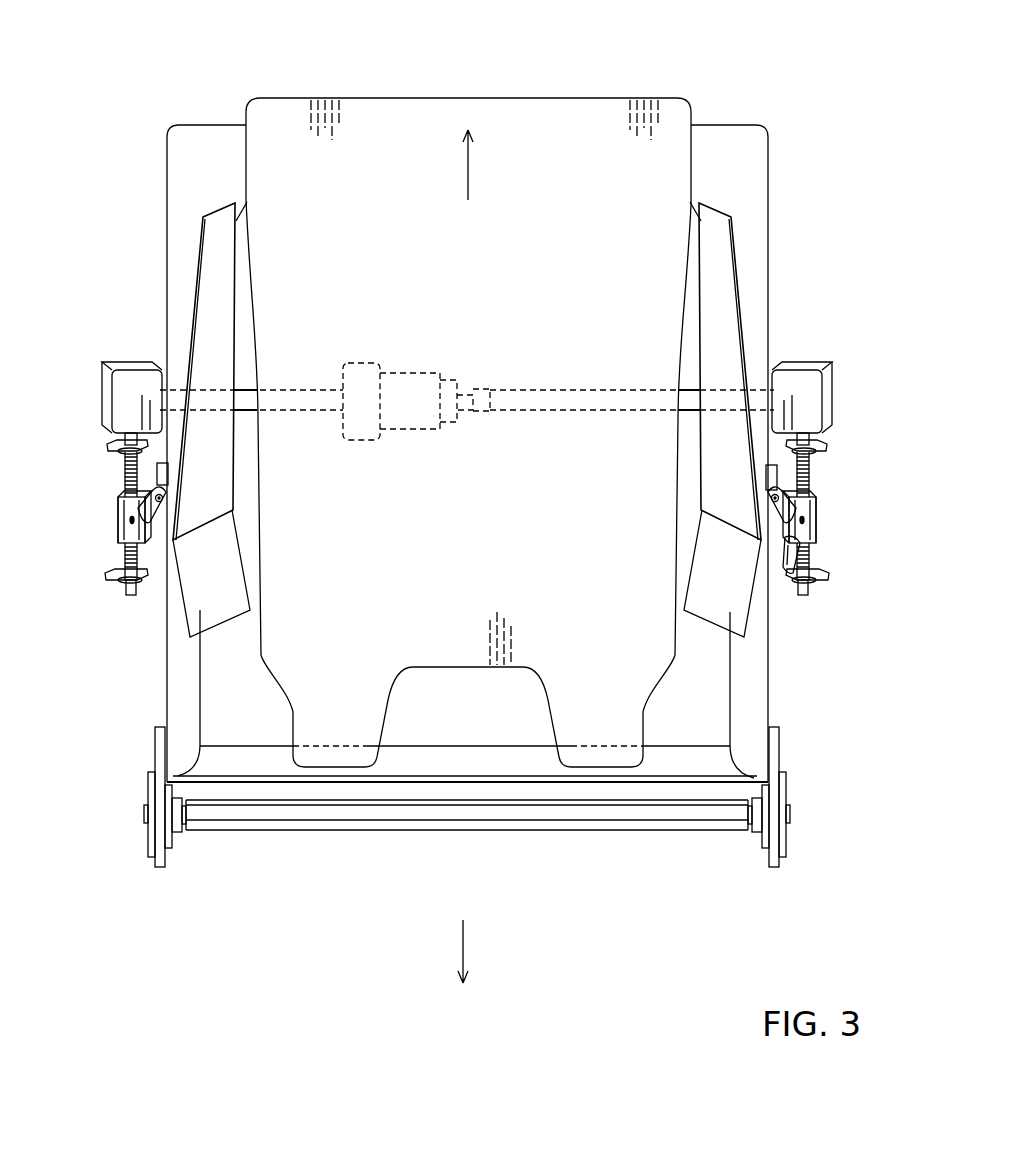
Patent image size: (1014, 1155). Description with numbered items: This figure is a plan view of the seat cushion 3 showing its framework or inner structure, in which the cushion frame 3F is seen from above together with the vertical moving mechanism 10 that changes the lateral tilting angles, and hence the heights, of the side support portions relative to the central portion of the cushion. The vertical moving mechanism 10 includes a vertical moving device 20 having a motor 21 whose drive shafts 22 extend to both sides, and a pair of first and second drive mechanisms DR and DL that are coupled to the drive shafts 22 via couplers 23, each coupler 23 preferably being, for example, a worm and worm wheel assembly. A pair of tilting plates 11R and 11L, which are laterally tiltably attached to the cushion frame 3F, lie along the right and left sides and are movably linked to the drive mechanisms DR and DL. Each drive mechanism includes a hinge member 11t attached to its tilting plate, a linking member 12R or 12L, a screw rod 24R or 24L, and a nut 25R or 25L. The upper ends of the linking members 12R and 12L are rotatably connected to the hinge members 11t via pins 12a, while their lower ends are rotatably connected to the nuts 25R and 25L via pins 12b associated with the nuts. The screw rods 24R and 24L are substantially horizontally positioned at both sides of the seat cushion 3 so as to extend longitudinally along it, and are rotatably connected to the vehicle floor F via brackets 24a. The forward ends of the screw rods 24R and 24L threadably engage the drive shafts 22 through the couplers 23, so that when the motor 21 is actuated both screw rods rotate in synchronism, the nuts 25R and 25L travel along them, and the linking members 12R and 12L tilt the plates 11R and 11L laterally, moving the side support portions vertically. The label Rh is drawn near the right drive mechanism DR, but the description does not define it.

The seat cushion 3 is at (686, 54).
The cushion frame 3F is at (722, 142).
The vertical moving mechanism 10 is at (505, 489).
The vertical moving device 20 is at (799, 174).
The tilting plate 11L is at (203, 275).
The tilting plate 11R is at (725, 278).
The hinge member 11t is at (166, 470).
The pin 12a is at (160, 502).
The pin 12b is at (131, 525).
The linking member 12L is at (104, 509).
The linking member 12R is at (838, 530).
The motor 21 is at (412, 382).
The drive shaft 22 is at (314, 400).
The coupler 23 is at (135, 383).
The bracket 24a is at (120, 443).
The screw rod 24L is at (125, 471).
The screw rod 24R is at (809, 472).
The nut 25L is at (118, 522).
The nut 25R is at (816, 519).
The drive mechanism DL is at (52, 468).
The drive mechanism DR is at (893, 458).
The release lever Rh is at (797, 560).
The vehicle floor F is at (205, 102).